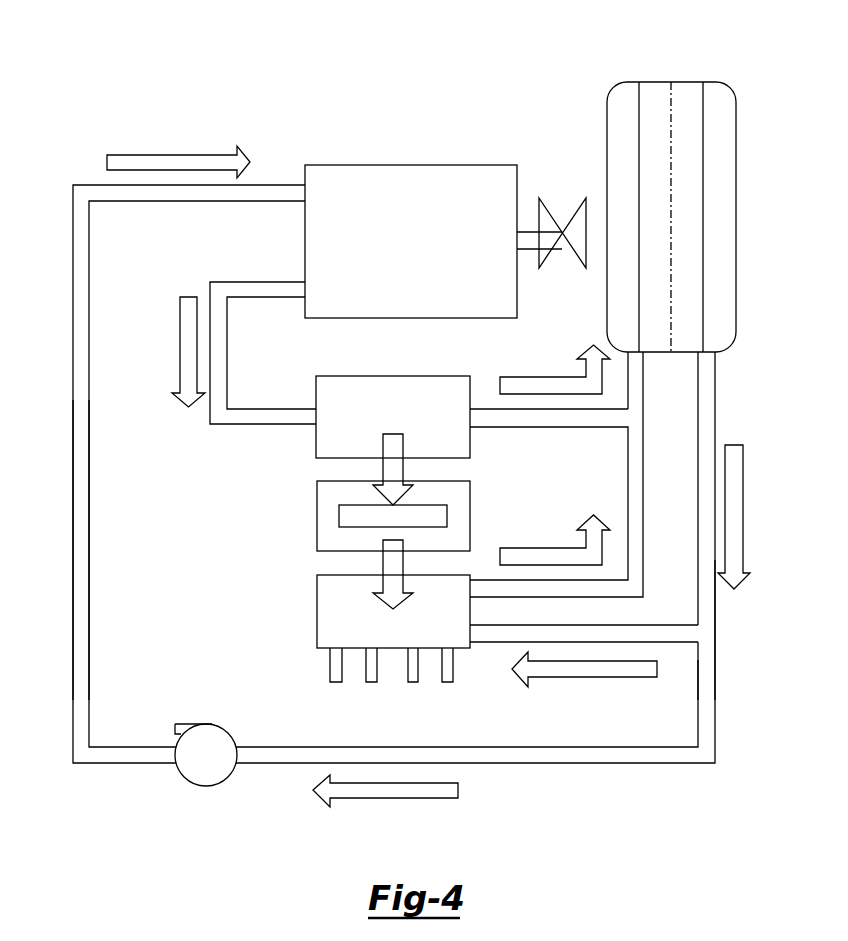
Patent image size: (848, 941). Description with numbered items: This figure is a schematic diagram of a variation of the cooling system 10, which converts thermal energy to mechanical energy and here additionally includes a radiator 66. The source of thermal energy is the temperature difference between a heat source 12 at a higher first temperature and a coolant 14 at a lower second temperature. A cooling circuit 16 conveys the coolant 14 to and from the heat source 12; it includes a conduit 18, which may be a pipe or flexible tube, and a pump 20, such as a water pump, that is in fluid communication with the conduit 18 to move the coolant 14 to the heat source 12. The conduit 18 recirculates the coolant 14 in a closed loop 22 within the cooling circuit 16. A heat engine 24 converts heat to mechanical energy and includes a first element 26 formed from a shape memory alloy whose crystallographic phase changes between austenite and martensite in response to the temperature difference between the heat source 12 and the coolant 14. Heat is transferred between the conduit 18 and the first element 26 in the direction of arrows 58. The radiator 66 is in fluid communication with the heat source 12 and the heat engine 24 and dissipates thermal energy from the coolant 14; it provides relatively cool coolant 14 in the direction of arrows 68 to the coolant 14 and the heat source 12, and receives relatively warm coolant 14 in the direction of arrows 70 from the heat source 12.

The cooling system 10 is at (44, 68).
The heat source 12 is at (422, 252).
The coolant 14 is at (541, 764).
The cooling circuit 16 is at (50, 740).
The conduit 18 is at (73, 475).
The pump 20 is at (203, 786).
The closed loop 22 is at (770, 672).
The heat engine 24 is at (339, 529).
The first element 26 is at (339, 512).
The arrows 58 is at (383, 469).
The radiator 66 is at (736, 212).
The arrows 68 is at (170, 155).
The arrows 70 is at (180, 347).